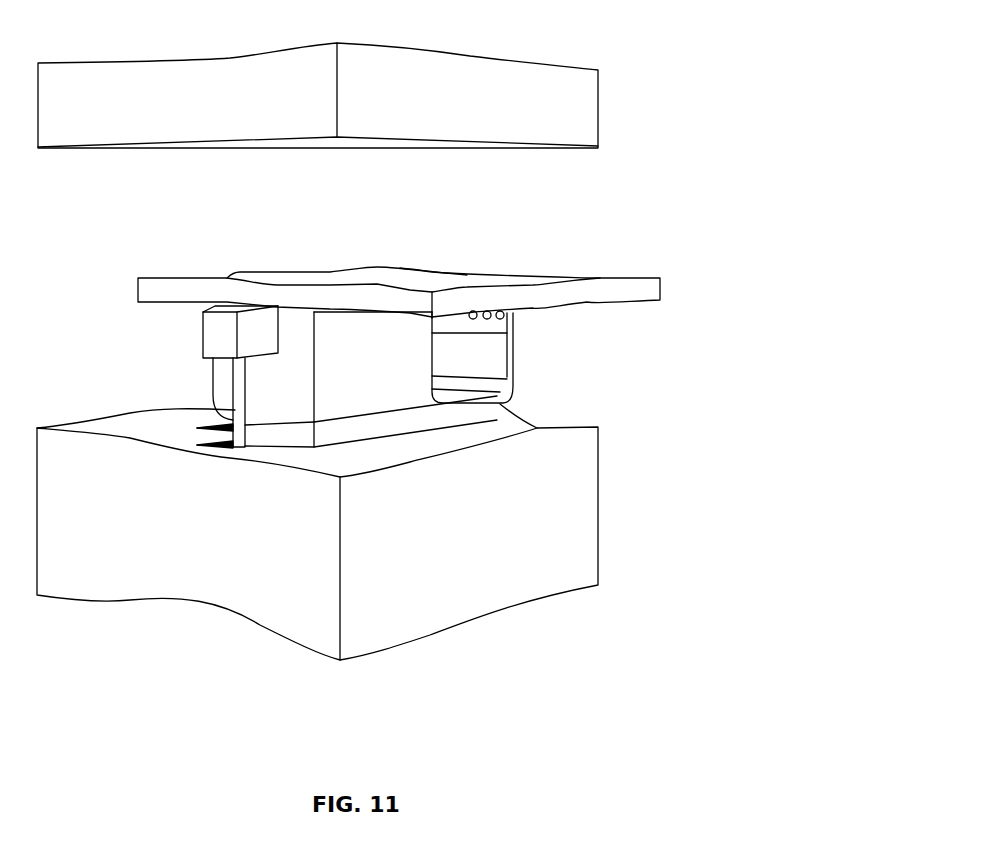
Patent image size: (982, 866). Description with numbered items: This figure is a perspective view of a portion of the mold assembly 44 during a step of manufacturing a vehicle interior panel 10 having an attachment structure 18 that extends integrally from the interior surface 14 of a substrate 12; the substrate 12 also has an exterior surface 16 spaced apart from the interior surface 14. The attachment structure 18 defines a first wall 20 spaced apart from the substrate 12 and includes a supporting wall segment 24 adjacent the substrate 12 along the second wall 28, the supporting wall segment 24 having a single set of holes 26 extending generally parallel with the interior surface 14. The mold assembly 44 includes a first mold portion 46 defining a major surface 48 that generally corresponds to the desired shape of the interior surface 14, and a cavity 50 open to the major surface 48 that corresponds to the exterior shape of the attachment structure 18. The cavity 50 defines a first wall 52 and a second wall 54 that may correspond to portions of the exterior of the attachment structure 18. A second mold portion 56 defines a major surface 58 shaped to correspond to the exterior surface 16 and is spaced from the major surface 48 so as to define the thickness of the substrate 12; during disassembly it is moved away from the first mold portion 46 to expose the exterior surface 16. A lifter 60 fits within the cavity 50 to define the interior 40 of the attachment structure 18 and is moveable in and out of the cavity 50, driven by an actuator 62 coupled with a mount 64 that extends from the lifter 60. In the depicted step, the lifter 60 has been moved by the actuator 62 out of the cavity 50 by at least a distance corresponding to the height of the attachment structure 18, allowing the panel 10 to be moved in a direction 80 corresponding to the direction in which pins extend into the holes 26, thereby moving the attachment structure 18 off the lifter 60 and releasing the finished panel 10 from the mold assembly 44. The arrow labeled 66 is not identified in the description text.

The panel 10 is at (620, 250).
The substrate 12 is at (655, 292).
The interior surface 14 is at (652, 320).
The exterior surface 16 is at (450, 285).
The attachment structure 18 is at (606, 352).
The first wall 20 is at (457, 407).
The supporting wall segment 24 is at (498, 325).
The holes 26 is at (487, 311).
The second wall 28 is at (513, 368).
The interior 40 is at (498, 388).
The mold assembly 44 is at (684, 437).
The first mold portion 46 is at (585, 528).
The major surface 48 is at (540, 427).
The cavity 50 is at (335, 430).
The first wall 52 is at (408, 431).
The second wall 54 is at (278, 430).
The second mold portion 56 is at (587, 103).
The major surface 58 is at (385, 146).
The lifter 60 is at (223, 380).
The actuator 62 is at (237, 423).
The mount 64 is at (213, 322).
The mating direction 66 is at (452, 352).
The direction 80 is at (486, 355).